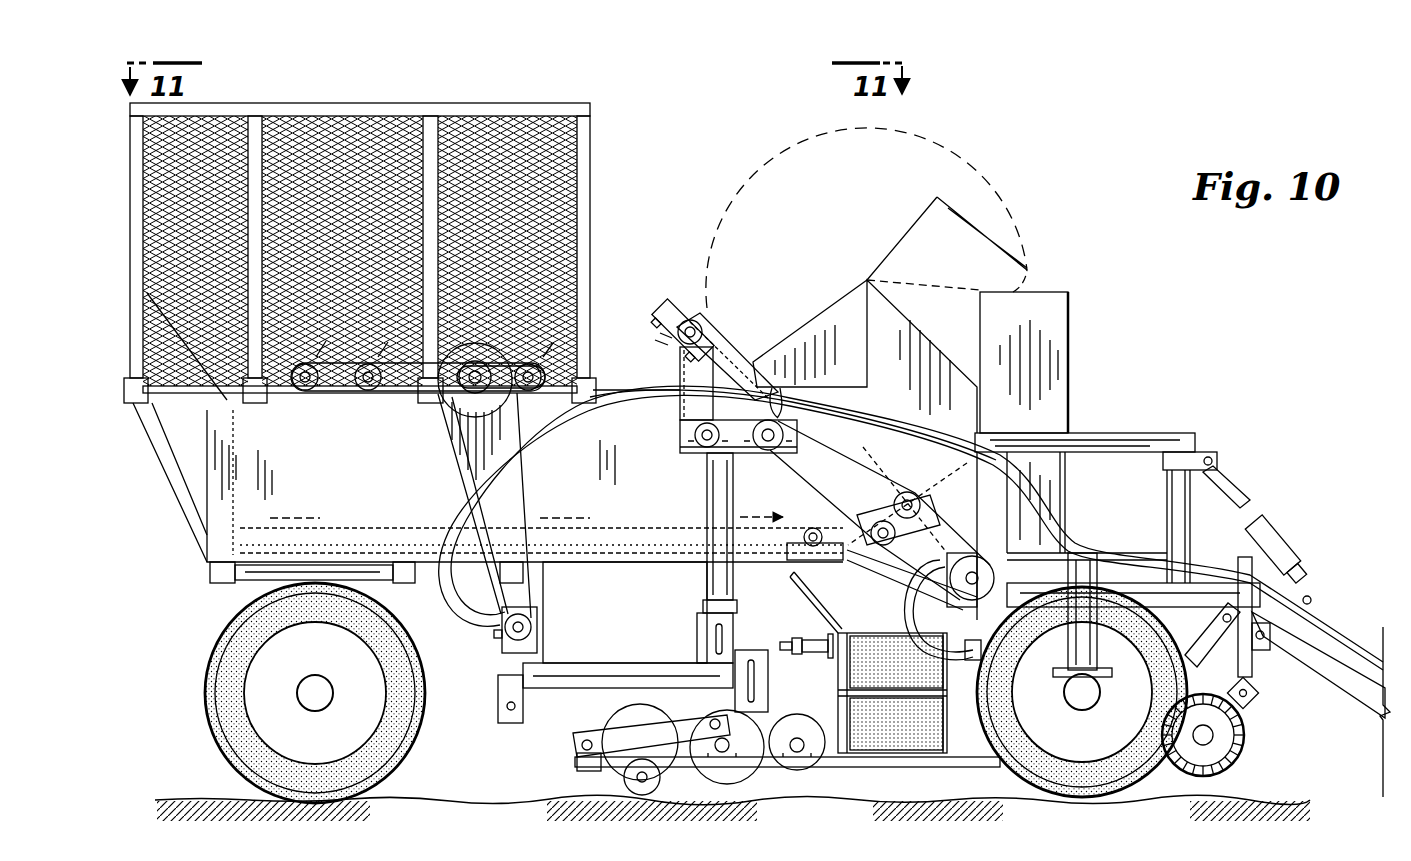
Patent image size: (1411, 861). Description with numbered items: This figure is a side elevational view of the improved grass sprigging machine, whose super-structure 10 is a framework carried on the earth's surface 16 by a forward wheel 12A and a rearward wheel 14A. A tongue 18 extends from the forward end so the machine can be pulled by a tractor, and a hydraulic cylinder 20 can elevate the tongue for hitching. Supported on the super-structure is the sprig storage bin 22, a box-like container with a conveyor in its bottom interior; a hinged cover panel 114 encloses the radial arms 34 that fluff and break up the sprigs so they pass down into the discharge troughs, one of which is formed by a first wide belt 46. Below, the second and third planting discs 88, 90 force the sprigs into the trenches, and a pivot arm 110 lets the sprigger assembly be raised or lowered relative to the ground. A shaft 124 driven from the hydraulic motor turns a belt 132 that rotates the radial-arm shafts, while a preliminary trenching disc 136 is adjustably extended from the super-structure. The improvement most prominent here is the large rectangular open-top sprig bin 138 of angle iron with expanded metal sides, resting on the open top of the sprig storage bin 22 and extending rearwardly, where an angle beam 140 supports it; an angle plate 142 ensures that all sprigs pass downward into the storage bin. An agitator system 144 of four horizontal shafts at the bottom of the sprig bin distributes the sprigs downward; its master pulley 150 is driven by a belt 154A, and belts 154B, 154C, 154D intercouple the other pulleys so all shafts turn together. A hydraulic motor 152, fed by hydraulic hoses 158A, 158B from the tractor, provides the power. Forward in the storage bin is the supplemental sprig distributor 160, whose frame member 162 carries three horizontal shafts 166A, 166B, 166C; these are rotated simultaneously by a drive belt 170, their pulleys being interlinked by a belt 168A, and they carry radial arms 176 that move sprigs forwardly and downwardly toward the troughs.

The super-structure 10 is at (1115, 358).
The forward wheel 12A is at (1095, 782).
The rearward wheel 14A is at (372, 763).
The earth's surface 16 is at (916, 798).
The tongue 18 is at (1358, 688).
The hydraulic cylinder 20 is at (1277, 537).
The sprig storage bin 22 is at (620, 484).
The radial arms 34 is at (880, 452).
The first wide belt 46 is at (874, 736).
The second planting disc 88 is at (745, 777).
The third planting disc 90 is at (648, 792).
The pivot arm 110 is at (613, 737).
The cover panel 114 is at (975, 222).
The shaft 124 is at (976, 577).
The belt 132 is at (910, 568).
The preliminary trenching disc 136 is at (1227, 741).
The sprig bin 138 is at (527, 104).
The angle beam 140 is at (173, 483).
The angle plate 142 is at (180, 330).
The agitator system 144 is at (449, 332).
The master pulley 150 is at (470, 404).
The hydraulic motor 152 is at (504, 646).
The belt 154A is at (462, 480).
The belt 154B is at (526, 397).
The belt 154C is at (420, 396).
The belt 154D is at (336, 398).
The hydraulic hose 158A is at (478, 628).
The hydraulic hose 158B is at (474, 607).
The supplemental sprig distributor 160 is at (739, 306).
The arm 162 is at (728, 353).
The horizontal shaft 166A is at (766, 445).
The horizontal shaft 166B is at (681, 313).
The horizontal shaft 166C is at (700, 456).
The clamp 168A is at (778, 406).
The drive belt 170 is at (838, 447).
The radial arms 176 is at (662, 338).